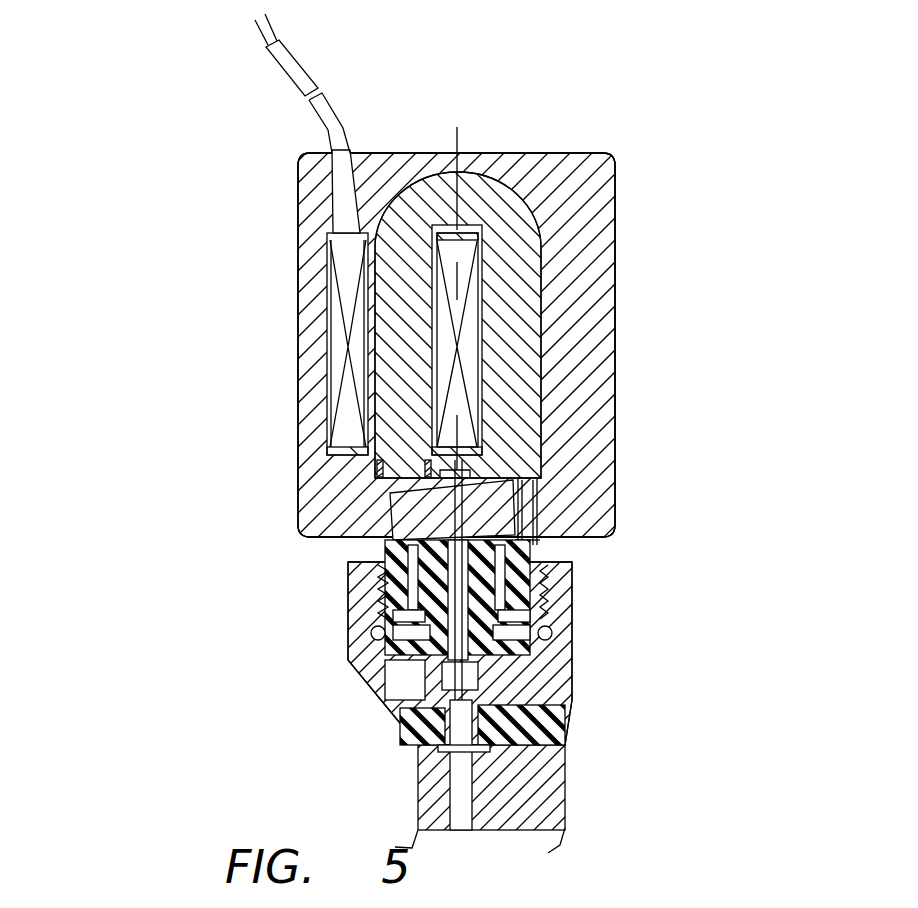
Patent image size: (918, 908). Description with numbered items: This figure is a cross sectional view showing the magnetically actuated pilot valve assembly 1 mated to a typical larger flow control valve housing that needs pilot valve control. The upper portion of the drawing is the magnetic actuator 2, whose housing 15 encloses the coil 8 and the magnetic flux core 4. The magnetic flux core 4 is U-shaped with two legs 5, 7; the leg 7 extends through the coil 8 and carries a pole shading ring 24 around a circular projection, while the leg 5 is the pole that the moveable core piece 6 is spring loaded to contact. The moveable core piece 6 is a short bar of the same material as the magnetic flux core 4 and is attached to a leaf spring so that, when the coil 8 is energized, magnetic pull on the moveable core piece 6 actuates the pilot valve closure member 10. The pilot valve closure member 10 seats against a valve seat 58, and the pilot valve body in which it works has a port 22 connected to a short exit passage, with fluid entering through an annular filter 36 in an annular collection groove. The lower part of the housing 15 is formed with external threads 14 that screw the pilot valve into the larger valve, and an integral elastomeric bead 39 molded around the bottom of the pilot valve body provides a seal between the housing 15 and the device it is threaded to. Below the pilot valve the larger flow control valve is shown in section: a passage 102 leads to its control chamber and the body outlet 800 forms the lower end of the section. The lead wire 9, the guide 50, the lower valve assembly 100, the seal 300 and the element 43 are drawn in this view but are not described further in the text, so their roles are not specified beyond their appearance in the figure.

The magnetically actuated pilot valve assembly 1 is at (635, 268).
The magnetic actuator 2 is at (617, 213).
The magnetic flux core 4 is at (357, 297).
The leg 5 is at (510, 372).
The moveable core piece 6 is at (427, 517).
The leg 7 is at (398, 355).
The coil 8 is at (319, 248).
The cable 9 is at (310, 80).
The pilot valve closure member 10 is at (522, 530).
The external threads 14 is at (350, 564).
The housing 15 is at (582, 187).
The pole shading ring 24 is at (382, 468).
The annular filter 36 is at (378, 612).
The integral bead 39 is at (371, 633).
The guide 50 is at (540, 488).
The valve seat 58 is at (475, 655).
The valve assembly 100 is at (579, 633).
The passage 102 is at (397, 682).
The seal 300 is at (555, 712).
The body outlet 800 is at (520, 792).
The element 43 is at (554, 898).
The port 22 is at (630, 897).